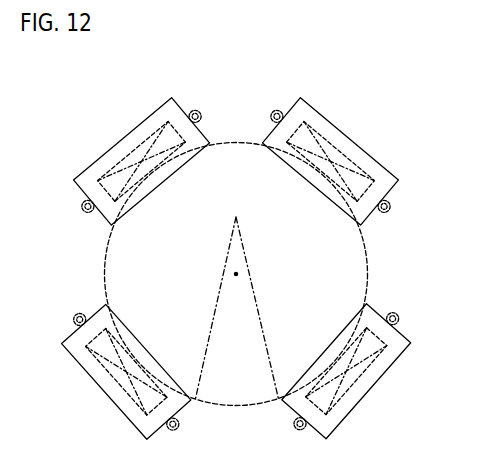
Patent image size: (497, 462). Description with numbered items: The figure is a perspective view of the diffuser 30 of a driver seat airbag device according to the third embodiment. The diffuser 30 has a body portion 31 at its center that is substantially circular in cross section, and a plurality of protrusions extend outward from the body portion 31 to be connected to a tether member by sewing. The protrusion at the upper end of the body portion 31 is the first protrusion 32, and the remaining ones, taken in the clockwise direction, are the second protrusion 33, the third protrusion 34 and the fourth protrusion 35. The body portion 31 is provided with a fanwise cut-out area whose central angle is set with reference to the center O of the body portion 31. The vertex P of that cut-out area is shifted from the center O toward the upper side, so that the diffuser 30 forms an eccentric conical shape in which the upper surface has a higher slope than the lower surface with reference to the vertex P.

The diffuser 30 is at (357, 85).
The body portion 31 is at (122, 265).
The first protrusion 32 is at (123, 137).
The second protrusion 33 is at (353, 136).
The third protrusion 34 is at (366, 389).
The fourth protrusion 35 is at (102, 394).
The vertex P is at (236, 217).
The center O is at (236, 274).